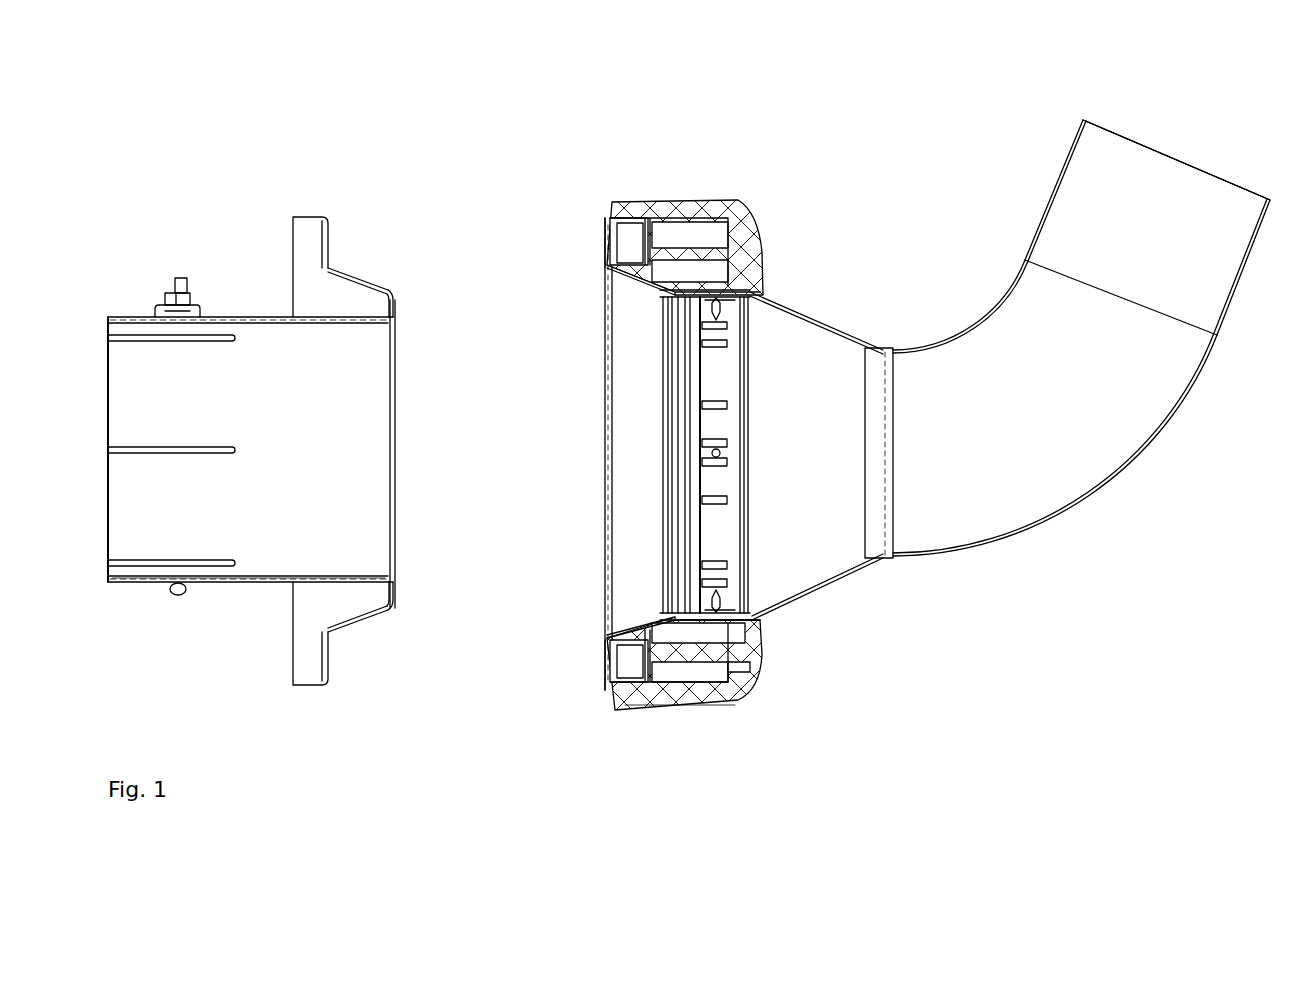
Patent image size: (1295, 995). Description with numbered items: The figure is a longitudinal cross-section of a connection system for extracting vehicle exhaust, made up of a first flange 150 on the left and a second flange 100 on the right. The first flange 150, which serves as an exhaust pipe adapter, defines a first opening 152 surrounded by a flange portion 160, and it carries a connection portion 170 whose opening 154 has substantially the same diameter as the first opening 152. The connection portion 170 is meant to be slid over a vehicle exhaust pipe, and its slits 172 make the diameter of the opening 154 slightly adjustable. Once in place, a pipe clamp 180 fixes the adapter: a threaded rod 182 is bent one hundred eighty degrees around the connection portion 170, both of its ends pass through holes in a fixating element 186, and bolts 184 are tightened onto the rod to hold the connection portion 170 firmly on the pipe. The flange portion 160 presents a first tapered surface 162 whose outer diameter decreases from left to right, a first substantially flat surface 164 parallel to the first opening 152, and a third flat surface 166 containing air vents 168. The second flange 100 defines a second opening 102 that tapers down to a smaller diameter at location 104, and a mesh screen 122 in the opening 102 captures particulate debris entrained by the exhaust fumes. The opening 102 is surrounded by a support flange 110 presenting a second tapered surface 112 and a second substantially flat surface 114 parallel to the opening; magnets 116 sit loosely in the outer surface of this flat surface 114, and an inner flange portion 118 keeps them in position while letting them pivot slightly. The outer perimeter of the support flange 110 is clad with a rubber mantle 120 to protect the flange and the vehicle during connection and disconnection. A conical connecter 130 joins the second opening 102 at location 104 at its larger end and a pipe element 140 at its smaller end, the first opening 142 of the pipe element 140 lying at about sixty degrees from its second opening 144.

The second flange 100 is at (892, 413).
The second opening 102 is at (639, 458).
The smaller diameter location 104 is at (776, 360).
The support flange 110 is at (660, 722).
The second tapered surface 112 is at (612, 275).
The second substantially flat surface 114 is at (600, 678).
The magnets 116 is at (630, 205).
The inner flange portion 118 is at (680, 690).
The rubber mantle 120 is at (683, 210).
The mesh screen 122 is at (700, 370).
The conical connecter 130 is at (858, 588).
The pipe element 140 is at (1027, 525).
The first opening of pipe element 142 is at (868, 435).
The second opening of pipe element 144 is at (1168, 150).
The first flange 150 is at (244, 373).
The first opening 152 is at (392, 447).
The opening of connection portion 154 is at (103, 405).
The flange portion 160 is at (380, 444).
The first tapered surface 162 is at (345, 276).
The first substantially flat surface 164 is at (332, 660).
The third flat surface 166 is at (391, 607).
The air vents 168 is at (392, 302).
The connection portion 170 is at (215, 584).
The slits 172 is at (160, 447).
The pipe clamp 180 is at (171, 436).
The threaded rod 182 is at (174, 282).
The bolts 184 is at (165, 300).
The fixating element 186 is at (200, 309).